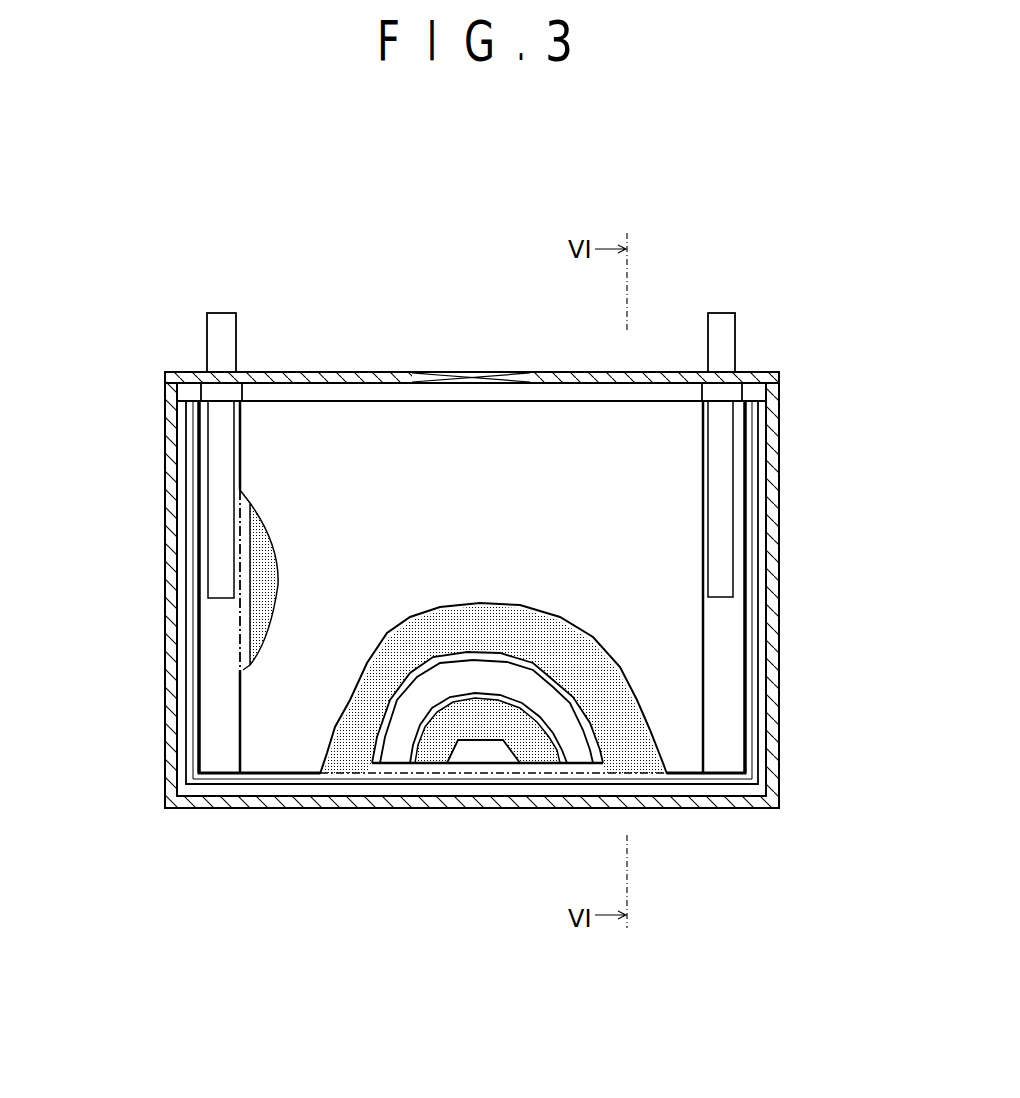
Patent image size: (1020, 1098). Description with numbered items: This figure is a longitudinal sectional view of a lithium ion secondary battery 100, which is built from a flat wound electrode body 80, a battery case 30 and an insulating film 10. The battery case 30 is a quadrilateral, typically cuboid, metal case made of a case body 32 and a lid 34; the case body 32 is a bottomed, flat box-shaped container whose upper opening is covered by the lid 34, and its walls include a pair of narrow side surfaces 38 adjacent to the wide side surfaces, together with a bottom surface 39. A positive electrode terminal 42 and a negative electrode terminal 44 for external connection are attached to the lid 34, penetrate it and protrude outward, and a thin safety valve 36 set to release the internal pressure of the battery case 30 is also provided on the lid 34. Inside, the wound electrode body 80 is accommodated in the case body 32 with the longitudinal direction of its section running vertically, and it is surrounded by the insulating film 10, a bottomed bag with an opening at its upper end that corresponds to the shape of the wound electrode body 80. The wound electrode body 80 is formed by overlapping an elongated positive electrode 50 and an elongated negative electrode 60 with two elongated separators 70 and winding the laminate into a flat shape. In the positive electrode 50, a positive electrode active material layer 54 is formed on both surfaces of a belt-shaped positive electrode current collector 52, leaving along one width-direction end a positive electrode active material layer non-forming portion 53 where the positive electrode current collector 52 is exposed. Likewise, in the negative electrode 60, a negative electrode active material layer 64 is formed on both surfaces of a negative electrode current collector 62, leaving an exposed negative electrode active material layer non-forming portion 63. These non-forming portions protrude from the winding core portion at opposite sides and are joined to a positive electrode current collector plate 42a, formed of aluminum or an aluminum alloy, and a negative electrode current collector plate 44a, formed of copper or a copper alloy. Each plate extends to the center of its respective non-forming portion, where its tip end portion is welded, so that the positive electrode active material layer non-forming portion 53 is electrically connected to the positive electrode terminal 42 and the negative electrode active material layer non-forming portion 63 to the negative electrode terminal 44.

The insulating film 10 is at (717, 785).
The battery case 30 is at (791, 497).
The case body 32 is at (780, 777).
The lid 34 is at (667, 370).
The safety valve 36 is at (475, 372).
The narrow side surfaces 38 is at (165, 545).
The bottom surface 39 is at (670, 810).
The positive electrode terminal 42 is at (222, 318).
The positive electrode current collector plate 42a is at (222, 476).
The negative electrode terminal 44 is at (722, 320).
The negative electrode current collector plate 44a is at (723, 437).
The positive electrode 50 is at (348, 753).
The positive electrode current collector 52 is at (199, 660).
The positive electrode active material layer non-forming portion 53 is at (215, 745).
The positive electrode active material layer 54 is at (263, 550).
The negative electrode 60 is at (433, 752).
The negative electrode current collector 62 is at (747, 612).
The negative electrode active material layer non-forming portion 63 is at (730, 663).
The negative electrode active material layer 64 is at (487, 812).
The separators 70 is at (282, 698).
The wound electrode body 80 is at (350, 422).
The lithium ion secondary battery 100 is at (788, 329).